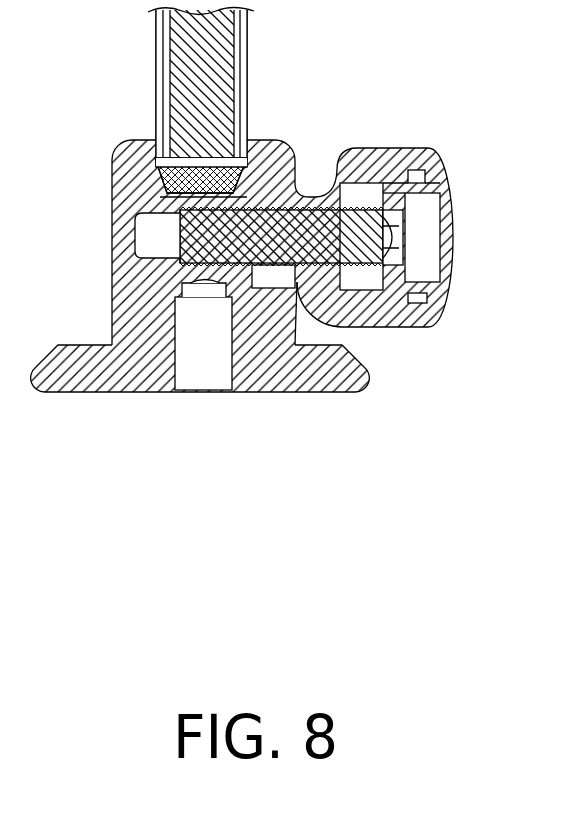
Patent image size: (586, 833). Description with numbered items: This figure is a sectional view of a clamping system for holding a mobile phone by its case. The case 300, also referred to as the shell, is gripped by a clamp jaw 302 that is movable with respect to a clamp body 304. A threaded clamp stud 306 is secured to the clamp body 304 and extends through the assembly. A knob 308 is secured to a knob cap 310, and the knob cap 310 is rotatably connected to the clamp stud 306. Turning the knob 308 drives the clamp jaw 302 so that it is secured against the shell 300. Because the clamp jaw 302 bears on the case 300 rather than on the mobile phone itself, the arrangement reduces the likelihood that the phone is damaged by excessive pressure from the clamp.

The case 300 is at (162, 178).
The clamp jaw 302 is at (263, 158).
The clamp body 304 is at (298, 377).
The threaded clamp stud 306 is at (385, 213).
The knob 308 is at (402, 167).
The knob cap 310 is at (424, 262).